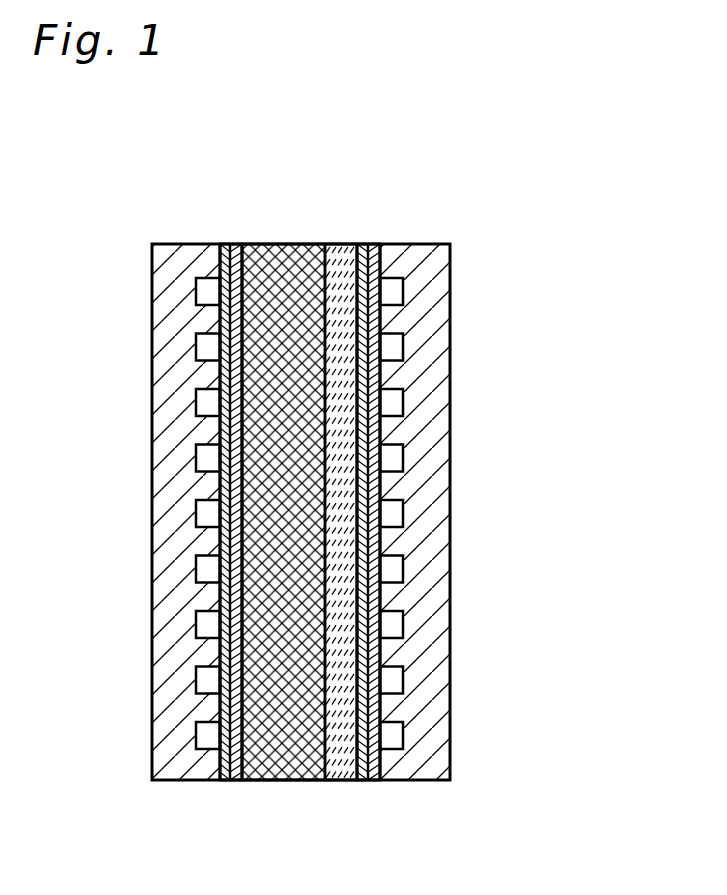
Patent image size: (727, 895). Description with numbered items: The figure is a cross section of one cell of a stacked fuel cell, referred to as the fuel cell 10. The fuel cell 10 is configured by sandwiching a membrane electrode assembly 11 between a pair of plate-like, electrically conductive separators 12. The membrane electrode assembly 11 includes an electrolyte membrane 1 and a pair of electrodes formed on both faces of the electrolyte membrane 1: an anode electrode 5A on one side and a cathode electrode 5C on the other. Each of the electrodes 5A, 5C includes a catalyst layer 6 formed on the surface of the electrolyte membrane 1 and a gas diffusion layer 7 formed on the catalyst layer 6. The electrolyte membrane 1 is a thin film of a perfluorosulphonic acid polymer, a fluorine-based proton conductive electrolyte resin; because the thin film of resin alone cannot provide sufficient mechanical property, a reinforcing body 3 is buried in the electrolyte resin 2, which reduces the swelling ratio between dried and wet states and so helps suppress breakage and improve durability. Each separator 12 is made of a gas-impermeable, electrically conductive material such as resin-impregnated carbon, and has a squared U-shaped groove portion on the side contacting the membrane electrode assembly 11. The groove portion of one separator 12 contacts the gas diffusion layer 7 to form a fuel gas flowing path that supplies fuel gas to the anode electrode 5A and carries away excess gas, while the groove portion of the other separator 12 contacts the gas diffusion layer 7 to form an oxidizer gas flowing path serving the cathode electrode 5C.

The electrolyte membrane 1 is at (245, 243).
The electrolyte resin 2 is at (343, 780).
The reinforcing body 3 is at (280, 780).
The anode electrode 5A is at (242, 243).
The cathode electrode 5C is at (380, 243).
The catalyst layer 6 is at (235, 780).
The gas diffusion layer 7 is at (225, 780).
The fuel cell 10 is at (511, 208).
The membrane electrode assembly 11 is at (215, 140).
The separator 12 is at (182, 243).